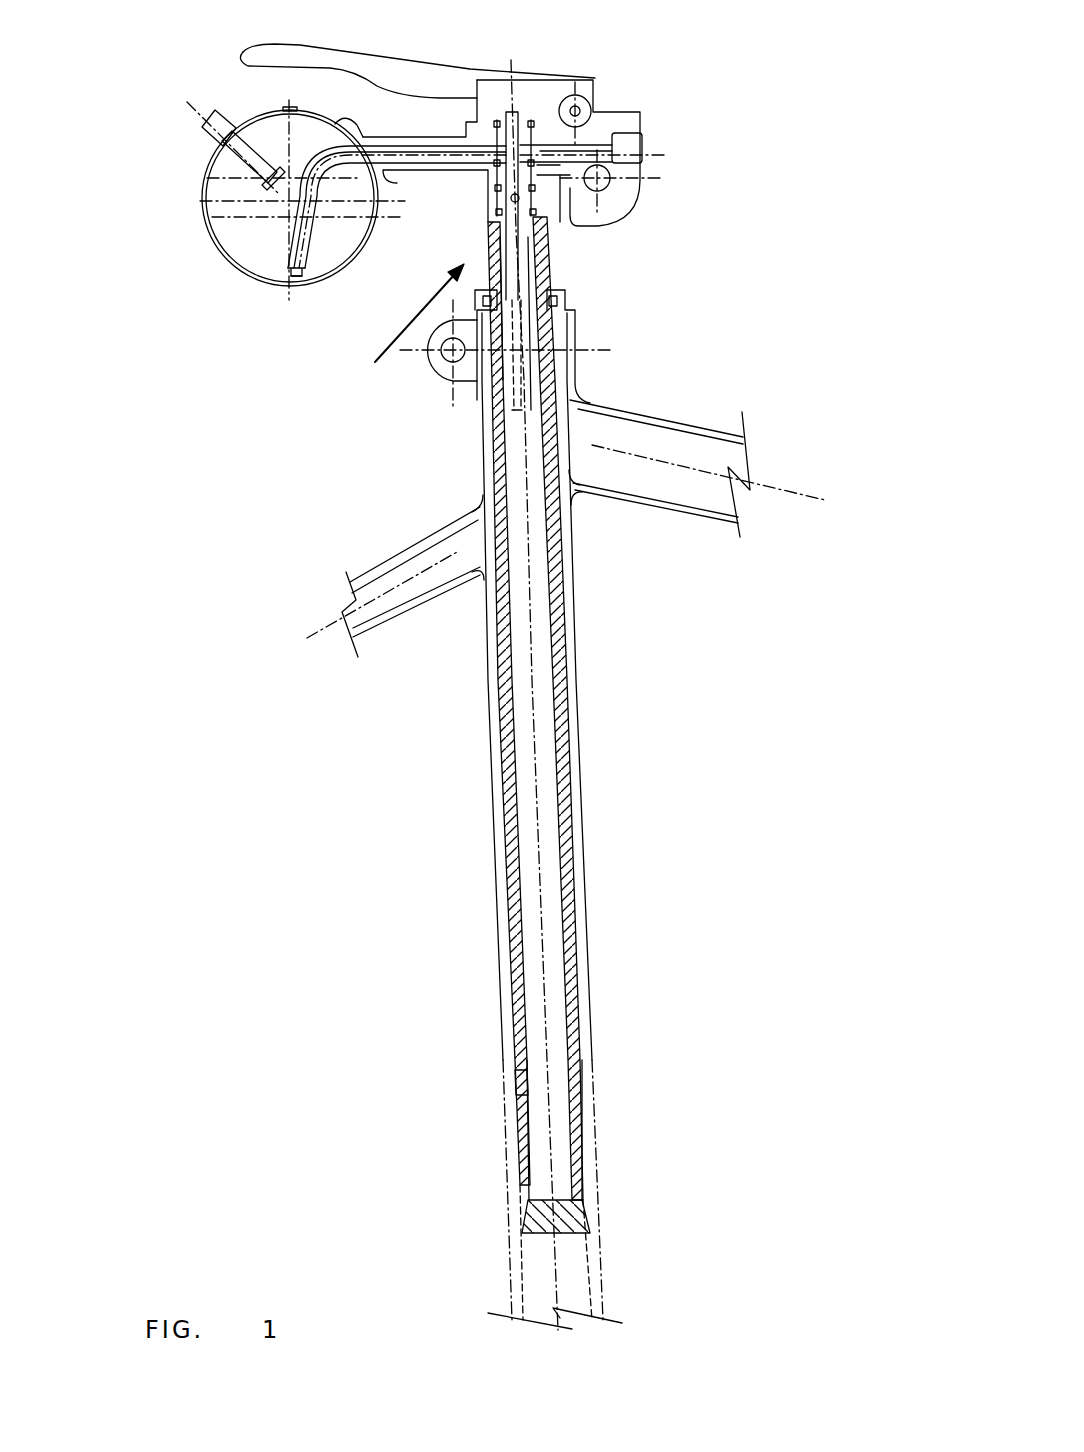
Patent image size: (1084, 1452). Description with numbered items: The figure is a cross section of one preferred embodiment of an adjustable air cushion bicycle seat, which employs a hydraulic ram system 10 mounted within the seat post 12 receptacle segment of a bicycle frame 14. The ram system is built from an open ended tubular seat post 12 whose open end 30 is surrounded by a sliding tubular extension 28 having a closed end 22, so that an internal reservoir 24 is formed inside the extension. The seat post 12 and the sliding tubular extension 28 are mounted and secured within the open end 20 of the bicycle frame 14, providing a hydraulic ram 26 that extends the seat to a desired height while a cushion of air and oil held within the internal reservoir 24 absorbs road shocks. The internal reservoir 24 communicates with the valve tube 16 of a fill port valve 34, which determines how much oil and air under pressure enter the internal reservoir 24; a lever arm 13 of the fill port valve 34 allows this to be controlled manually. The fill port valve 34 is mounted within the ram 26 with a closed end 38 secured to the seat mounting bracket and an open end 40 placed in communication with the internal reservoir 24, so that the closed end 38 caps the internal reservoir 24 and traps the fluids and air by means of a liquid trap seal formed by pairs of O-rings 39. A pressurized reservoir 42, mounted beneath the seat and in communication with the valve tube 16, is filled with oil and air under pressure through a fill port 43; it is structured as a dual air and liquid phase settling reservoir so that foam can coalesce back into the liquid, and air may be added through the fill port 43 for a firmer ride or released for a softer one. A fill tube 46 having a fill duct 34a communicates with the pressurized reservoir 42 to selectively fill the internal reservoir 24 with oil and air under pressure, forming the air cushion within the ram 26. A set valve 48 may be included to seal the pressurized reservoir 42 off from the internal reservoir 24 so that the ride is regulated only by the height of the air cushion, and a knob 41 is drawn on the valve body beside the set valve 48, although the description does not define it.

The hydraulic ram system 10 is at (802, 447).
The seat post 12 is at (526, 227).
The lever arm 13 is at (265, 50).
The bicycle frame 14 is at (583, 862).
The valve tube 16 is at (523, 260).
The open end of the bicycle frame 20 is at (562, 300).
The closed end 22 is at (578, 1215).
The internal reservoir 24 is at (543, 1090).
The ram 26 is at (381, 332).
The sliding tubular extension 28 is at (563, 613).
The open end of the seat post 30 is at (523, 1080).
The fill port valve 34 is at (500, 203).
The fill duct 34a is at (295, 276).
The closed end of the fill port valve 38 is at (520, 92).
The O-rings 39 is at (498, 210).
The open end of the fill port valve 40 is at (521, 412).
The adjusting knob 41 is at (530, 166).
The pressurized reservoir 42 is at (223, 262).
The fill port 43 is at (203, 128).
The fill tube 46 is at (290, 270).
The set valve 48 is at (535, 195).